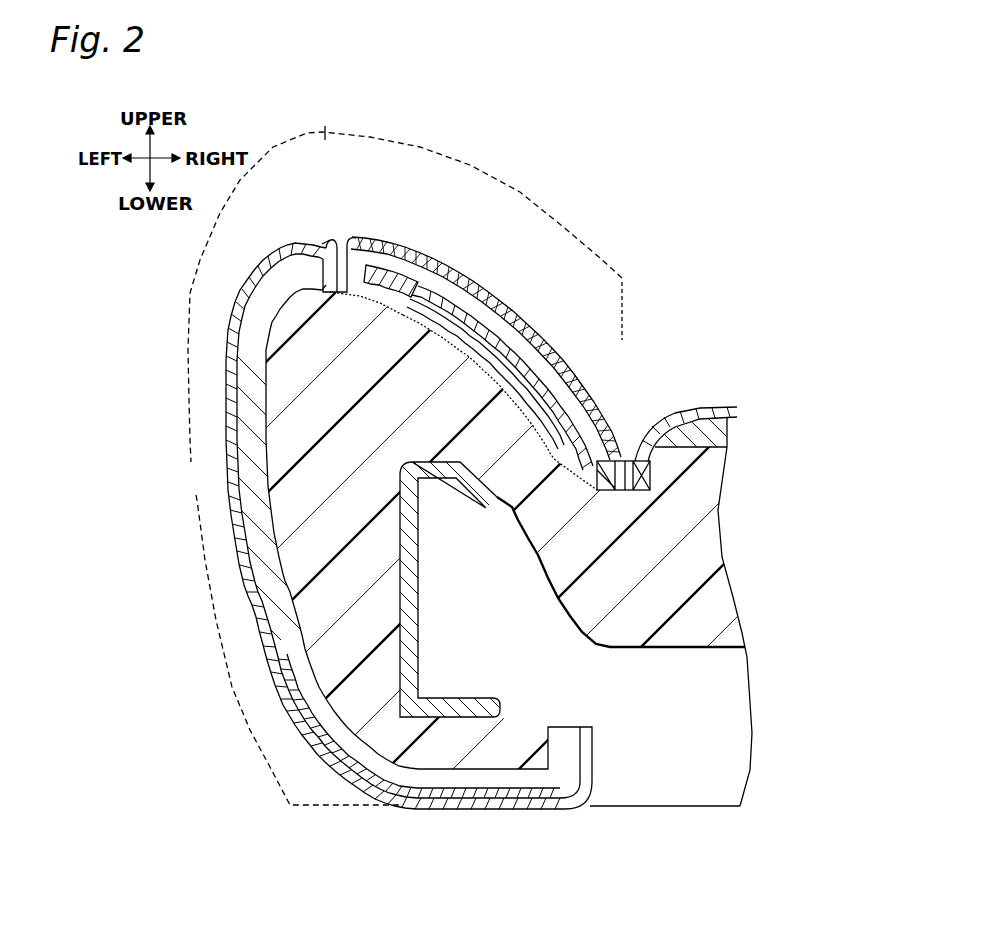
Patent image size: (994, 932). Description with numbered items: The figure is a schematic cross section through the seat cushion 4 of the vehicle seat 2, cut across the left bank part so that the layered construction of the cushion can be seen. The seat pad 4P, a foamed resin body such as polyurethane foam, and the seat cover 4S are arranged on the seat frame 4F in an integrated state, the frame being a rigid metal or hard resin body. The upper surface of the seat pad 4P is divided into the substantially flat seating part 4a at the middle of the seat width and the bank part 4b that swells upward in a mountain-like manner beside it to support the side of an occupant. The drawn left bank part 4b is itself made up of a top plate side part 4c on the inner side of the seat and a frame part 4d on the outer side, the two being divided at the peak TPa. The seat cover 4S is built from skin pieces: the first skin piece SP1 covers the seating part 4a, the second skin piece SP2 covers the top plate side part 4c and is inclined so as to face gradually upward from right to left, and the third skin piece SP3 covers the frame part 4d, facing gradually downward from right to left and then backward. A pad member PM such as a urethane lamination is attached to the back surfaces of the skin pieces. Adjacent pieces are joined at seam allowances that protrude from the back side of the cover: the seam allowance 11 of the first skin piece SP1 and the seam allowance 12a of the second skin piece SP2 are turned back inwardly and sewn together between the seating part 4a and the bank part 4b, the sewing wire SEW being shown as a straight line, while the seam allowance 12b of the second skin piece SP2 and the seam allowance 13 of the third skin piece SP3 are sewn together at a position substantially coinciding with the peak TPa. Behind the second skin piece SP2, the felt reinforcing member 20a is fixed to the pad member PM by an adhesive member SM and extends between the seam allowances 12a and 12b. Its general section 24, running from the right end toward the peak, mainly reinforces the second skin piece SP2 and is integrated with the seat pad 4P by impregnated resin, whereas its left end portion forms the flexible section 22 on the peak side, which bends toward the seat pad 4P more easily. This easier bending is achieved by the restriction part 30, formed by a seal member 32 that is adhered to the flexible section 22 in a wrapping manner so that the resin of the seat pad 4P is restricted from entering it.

The vehicle seat 2 is at (662, 830).
The seat cushion 4 is at (671, 669).
The seating part 4a is at (742, 278).
The bank part 4b is at (389, 465).
The top plate side part 4c is at (405, 294).
The frame part 4d is at (278, 637).
The seat frame 4F is at (418, 660).
The seat pad 4P is at (715, 608).
The seat cover 4S is at (435, 410).
The seam allowance 11 is at (668, 440).
The seam allowance 12a is at (610, 436).
The seam allowance 12b is at (383, 248).
The seam allowance 13 is at (292, 245).
The reinforcing member 20a is at (553, 378).
The flexible section 22 is at (383, 296).
The general section 24 is at (512, 352).
The restriction part 30 is at (422, 288).
The seal member 32 is at (502, 337).
The pad member PM is at (507, 330).
The adhesive member SM is at (450, 303).
The sewing wire SEW is at (346, 244).
The first skin piece SP1 is at (706, 406).
The second skin piece SP2 is at (476, 312).
The third skin piece SP3 is at (239, 566).
The peak TPa is at (325, 230).